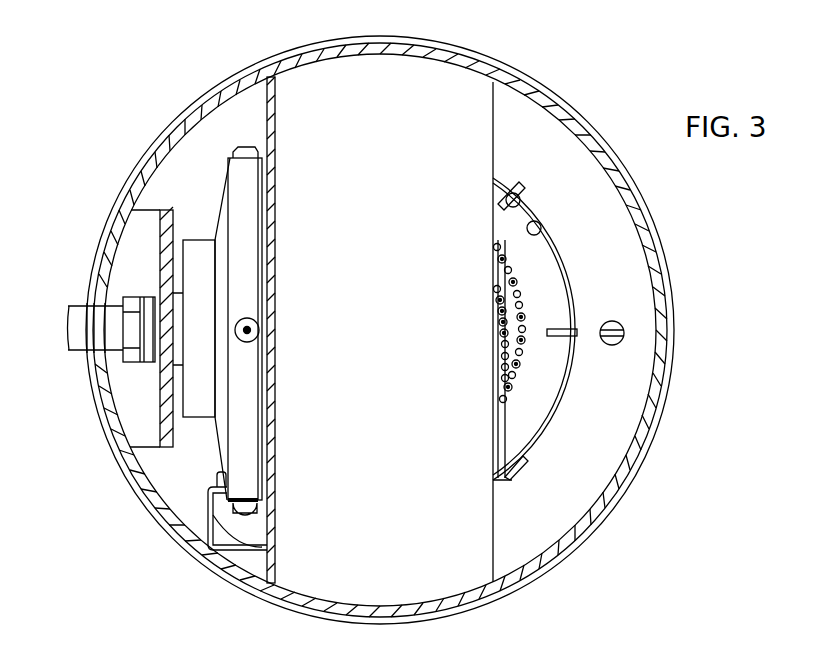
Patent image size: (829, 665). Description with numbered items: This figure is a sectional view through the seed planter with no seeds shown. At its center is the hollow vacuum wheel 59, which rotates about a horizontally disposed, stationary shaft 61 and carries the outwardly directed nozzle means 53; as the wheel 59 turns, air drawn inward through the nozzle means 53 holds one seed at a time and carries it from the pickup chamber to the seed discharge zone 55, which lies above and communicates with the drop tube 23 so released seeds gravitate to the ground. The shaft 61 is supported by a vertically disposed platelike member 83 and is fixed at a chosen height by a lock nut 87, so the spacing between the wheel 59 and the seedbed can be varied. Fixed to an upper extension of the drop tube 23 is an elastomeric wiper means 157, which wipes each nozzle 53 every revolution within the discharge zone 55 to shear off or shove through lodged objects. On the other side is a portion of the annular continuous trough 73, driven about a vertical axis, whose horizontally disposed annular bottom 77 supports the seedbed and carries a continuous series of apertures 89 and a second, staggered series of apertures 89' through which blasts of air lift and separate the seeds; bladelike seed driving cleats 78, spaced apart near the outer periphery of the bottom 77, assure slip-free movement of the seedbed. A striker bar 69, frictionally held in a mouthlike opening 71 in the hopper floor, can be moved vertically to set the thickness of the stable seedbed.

The drop tube 23 is at (213, 563).
The nozzle means 53 is at (245, 149).
The seed discharge zone 55 is at (258, 525).
The hollow wheel 59 is at (243, 238).
The shaft 61 is at (77, 328).
The striker bar 69 is at (495, 457).
The mouthlike opening 71 is at (537, 231).
The annular continuous trough 73 is at (540, 392).
The annular bottom 77 is at (554, 307).
The seed driving cleats 78 is at (523, 197).
The platelike member 83 is at (173, 228).
The lock nut 87 is at (133, 354).
The apertures 89 is at (558, 319).
The second series of apertures 89' is at (472, 334).
The wiper means 157 is at (218, 478).